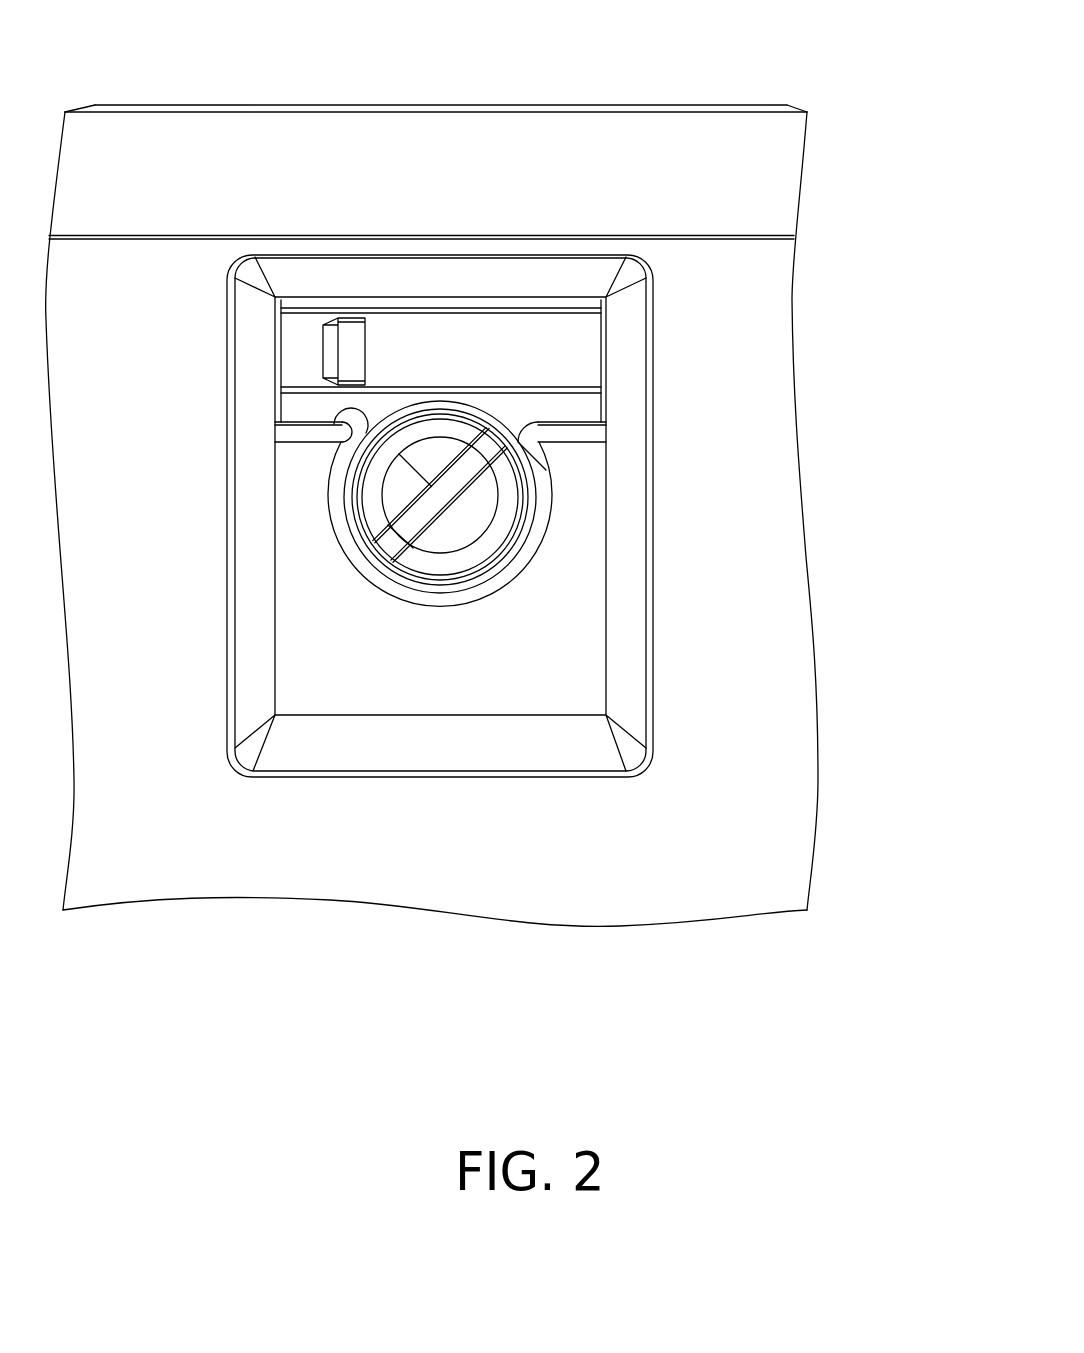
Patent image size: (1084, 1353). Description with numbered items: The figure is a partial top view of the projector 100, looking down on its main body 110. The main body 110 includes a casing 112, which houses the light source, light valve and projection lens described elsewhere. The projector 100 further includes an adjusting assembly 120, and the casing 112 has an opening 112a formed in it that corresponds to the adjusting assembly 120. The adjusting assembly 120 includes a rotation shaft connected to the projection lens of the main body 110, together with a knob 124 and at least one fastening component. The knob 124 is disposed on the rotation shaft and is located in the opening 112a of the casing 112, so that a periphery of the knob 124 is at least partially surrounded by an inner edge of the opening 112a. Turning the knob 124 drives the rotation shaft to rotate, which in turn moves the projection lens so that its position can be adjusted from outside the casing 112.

The projector 100 is at (912, 1013).
The main body 110 is at (828, 450).
The casing 112 is at (752, 570).
The opening 112a is at (515, 548).
The adjusting assembly 120 is at (500, 410).
The knob 124 is at (430, 453).